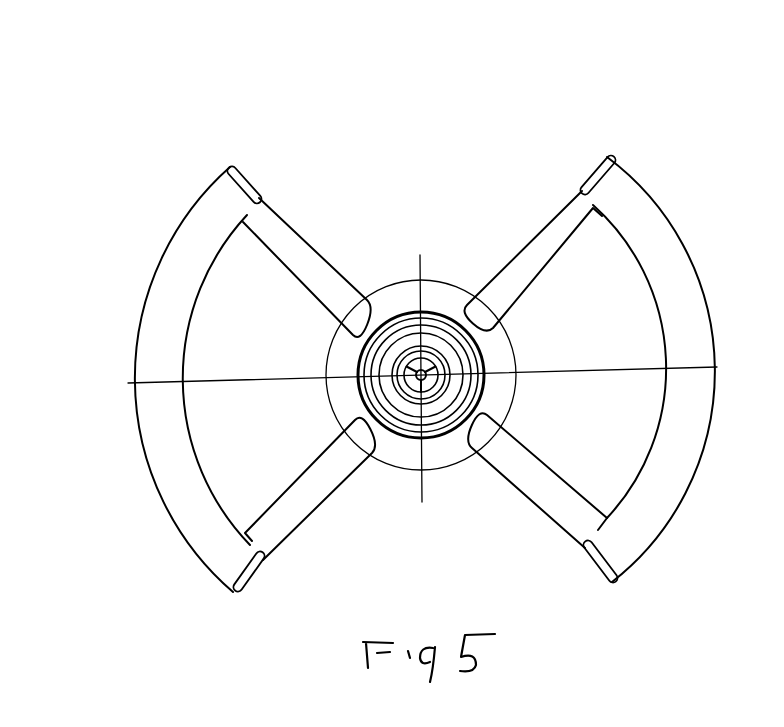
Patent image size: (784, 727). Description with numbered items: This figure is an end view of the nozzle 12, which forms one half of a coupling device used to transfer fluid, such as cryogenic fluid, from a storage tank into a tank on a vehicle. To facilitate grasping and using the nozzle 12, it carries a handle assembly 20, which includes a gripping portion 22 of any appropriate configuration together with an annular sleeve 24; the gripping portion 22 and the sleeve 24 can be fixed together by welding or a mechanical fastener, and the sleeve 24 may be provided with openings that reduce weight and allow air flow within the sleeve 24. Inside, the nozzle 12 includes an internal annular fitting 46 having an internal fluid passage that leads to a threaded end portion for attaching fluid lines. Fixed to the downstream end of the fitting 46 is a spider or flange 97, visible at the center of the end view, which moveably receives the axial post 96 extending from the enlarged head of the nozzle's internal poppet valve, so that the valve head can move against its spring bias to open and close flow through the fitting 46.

The nozzle 12 is at (563, 130).
The handle assembly 20 is at (703, 268).
The gripping portion 22 is at (672, 481).
The annular sleeve 24 is at (508, 345).
The internal annular fitting 46 is at (448, 432).
The axial post 96 is at (324, 399).
The spider or flange 97 is at (424, 350).